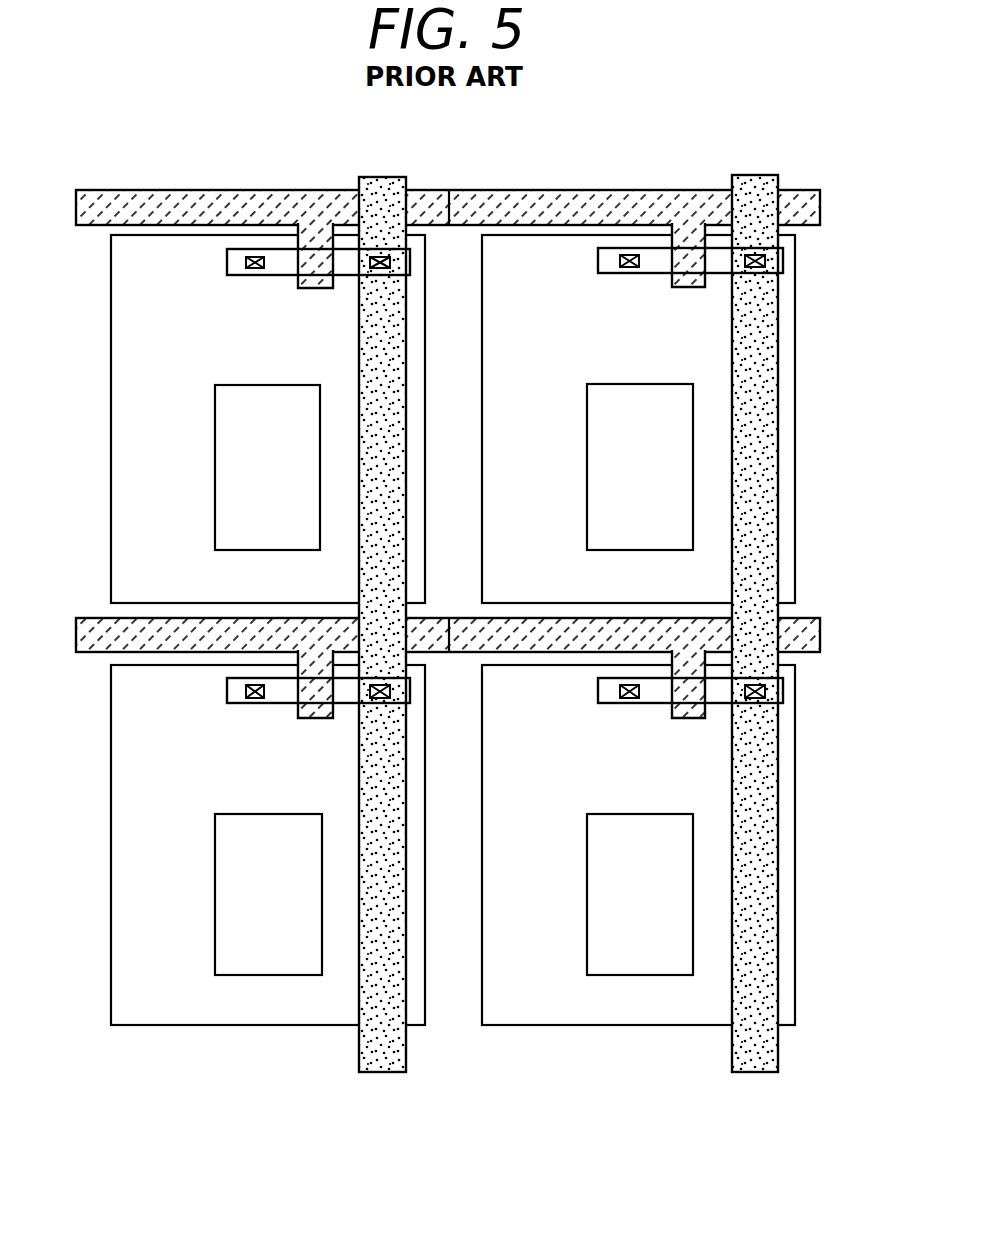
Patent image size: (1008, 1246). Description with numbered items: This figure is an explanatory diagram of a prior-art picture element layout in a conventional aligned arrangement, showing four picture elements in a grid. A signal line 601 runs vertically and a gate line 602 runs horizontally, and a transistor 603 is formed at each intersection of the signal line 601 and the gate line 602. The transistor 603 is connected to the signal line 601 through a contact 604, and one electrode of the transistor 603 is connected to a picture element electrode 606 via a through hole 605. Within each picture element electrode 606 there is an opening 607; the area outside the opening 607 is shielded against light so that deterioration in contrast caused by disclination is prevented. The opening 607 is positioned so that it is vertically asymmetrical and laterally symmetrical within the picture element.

The signal line 601 is at (765, 1050).
The gate line 602 is at (600, 190).
The transistor 603 is at (690, 288).
The contact 604 is at (770, 260).
The through hole 605 is at (630, 273).
The picture element electrode 606 is at (482, 430).
The opening 607 is at (645, 548).